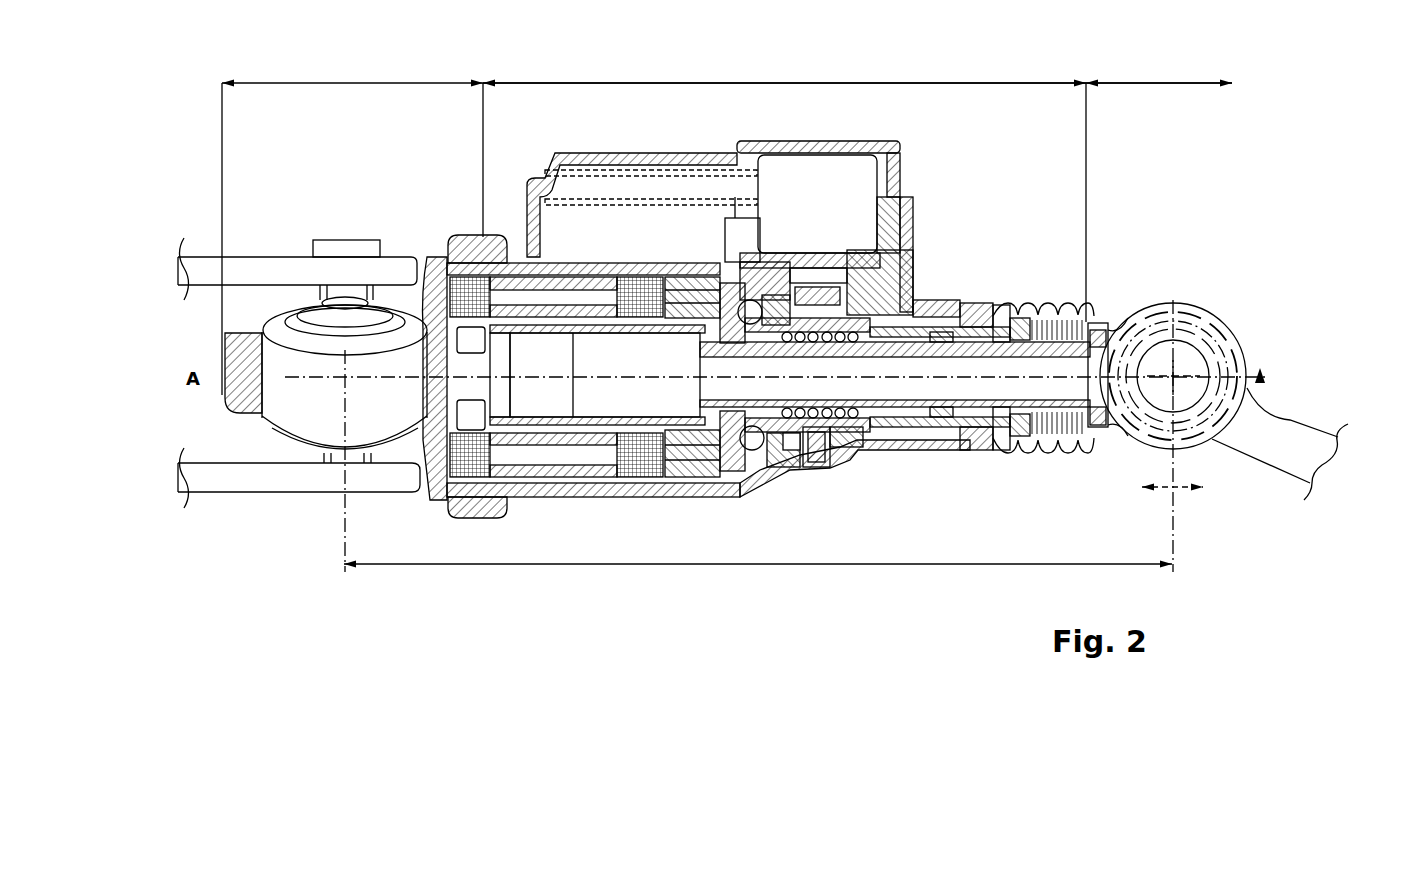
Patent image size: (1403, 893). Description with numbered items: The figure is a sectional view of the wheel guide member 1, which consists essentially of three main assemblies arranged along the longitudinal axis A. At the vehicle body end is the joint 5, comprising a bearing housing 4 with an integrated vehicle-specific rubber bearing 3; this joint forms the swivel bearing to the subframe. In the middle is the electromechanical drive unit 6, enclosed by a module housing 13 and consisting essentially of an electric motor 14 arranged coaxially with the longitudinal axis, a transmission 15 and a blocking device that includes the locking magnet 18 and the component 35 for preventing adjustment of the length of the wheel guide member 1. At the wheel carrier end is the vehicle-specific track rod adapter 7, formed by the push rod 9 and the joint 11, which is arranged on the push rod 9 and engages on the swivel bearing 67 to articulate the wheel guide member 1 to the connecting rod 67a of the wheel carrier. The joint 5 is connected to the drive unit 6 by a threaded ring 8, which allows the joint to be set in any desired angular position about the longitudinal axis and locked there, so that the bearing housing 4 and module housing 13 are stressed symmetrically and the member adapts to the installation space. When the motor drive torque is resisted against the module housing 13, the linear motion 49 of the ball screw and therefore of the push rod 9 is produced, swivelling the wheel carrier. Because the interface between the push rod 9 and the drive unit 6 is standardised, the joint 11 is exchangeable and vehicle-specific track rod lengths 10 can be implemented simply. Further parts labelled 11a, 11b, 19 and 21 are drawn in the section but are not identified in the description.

The wheel guide member 1 is at (318, 506).
The rubber bearing 3 is at (408, 310).
The bearing housing 4 is at (245, 414).
The joint at the vehicle body end 5 is at (361, 80).
The electromechanical drive unit 6 is at (787, 80).
The track rod adapter 7 is at (1158, 80).
The threaded ring 8 is at (466, 235).
The push rod 9 is at (989, 424).
The track rod length 10 is at (758, 575).
The joint at the wheel carrier end 11 is at (1186, 302).
The rod part 11a is at (212, 498).
The rod part 11b is at (244, 267).
The module housing 13 is at (828, 468).
The electric motor 14 is at (537, 474).
The transmission 15 is at (856, 445).
The locking magnet 18 is at (863, 220).
The bellows 19 is at (1008, 312).
The cover 21 is at (880, 155).
The blocking device component 35 is at (860, 290).
The linear motion 49 is at (1193, 490).
The swivel bearing 67 is at (1180, 367).
The connecting rod 67a is at (1290, 418).